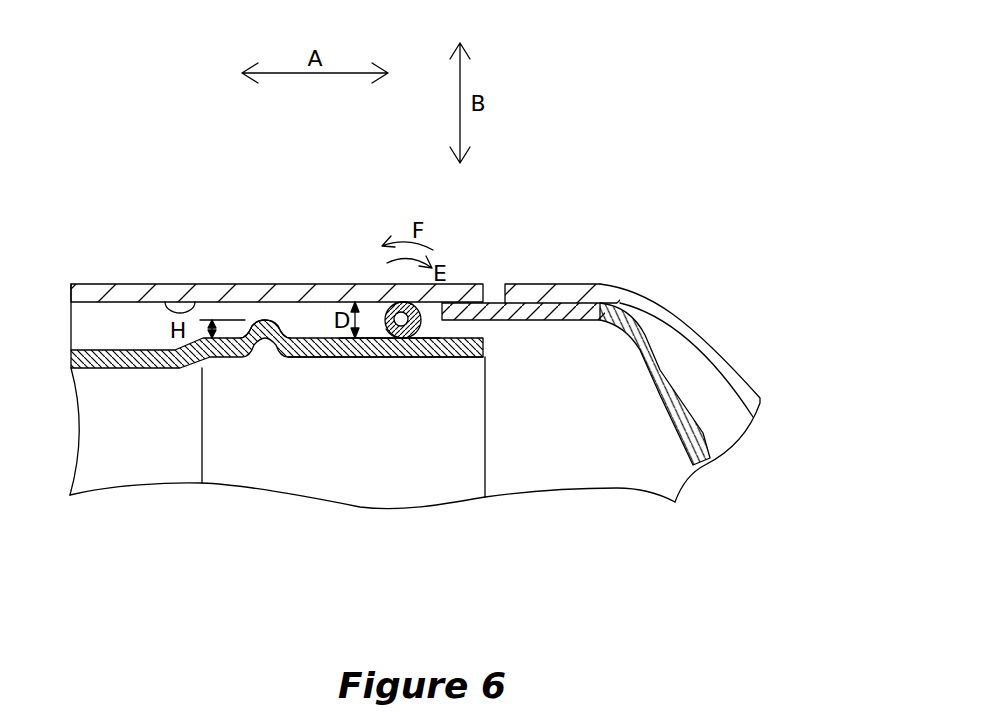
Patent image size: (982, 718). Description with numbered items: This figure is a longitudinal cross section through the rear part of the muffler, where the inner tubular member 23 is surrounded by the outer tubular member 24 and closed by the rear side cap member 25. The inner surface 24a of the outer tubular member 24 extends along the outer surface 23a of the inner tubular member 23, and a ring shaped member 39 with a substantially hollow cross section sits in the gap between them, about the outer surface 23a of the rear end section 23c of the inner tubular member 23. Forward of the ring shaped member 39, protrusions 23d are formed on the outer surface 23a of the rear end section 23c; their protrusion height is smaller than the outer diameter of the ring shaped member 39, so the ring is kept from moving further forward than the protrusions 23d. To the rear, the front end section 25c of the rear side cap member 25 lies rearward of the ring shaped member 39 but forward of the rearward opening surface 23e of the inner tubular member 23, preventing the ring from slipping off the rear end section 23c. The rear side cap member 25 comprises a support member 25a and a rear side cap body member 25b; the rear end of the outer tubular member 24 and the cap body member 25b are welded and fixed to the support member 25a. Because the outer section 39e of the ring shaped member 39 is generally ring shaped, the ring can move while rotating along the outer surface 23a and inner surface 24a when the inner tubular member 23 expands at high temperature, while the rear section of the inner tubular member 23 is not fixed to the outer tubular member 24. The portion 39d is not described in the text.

The inner tubular member 23 is at (103, 352).
The outer surface of inner tubular member 23a is at (308, 353).
The rear end section of inner tubular member 23c is at (372, 358).
The protrusions 23d is at (265, 320).
The rearward opening surface of inner tubular member 23e is at (487, 462).
The outer tubular member 24 is at (153, 287).
The inner surface of outer tubular member 24a is at (197, 290).
The rear side cap member 25 is at (737, 380).
The support member 25a is at (702, 433).
The rear side cap body member 25b is at (688, 335).
The front end section of rear side cap member 25c is at (452, 312).
The ring shaped member 39 is at (388, 313).
The upper contact portion of O-ring 39d is at (392, 306).
The outer section of ring shaped member 39e is at (375, 325).